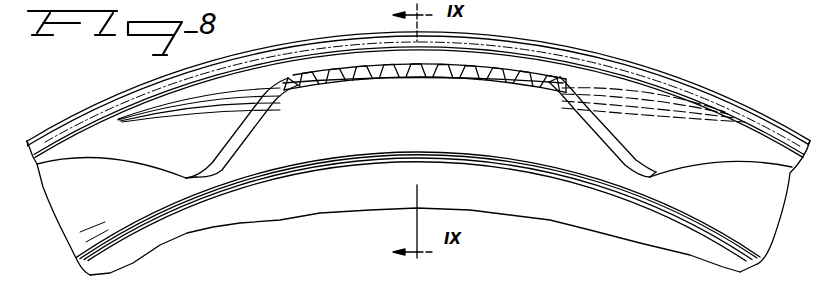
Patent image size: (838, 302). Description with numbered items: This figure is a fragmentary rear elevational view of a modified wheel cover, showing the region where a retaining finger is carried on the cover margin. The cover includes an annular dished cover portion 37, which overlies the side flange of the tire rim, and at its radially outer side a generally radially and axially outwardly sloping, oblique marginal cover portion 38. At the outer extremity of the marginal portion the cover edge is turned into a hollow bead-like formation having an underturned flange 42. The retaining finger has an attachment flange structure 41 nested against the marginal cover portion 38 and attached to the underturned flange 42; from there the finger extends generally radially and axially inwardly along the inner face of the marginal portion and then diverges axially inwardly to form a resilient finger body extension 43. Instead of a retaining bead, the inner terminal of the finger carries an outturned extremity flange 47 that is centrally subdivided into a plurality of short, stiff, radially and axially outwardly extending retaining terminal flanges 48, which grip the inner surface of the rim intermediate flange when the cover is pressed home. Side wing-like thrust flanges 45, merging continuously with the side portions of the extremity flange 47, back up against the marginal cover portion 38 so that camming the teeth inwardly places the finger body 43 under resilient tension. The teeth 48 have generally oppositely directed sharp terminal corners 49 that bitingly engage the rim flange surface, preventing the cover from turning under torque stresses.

The annular dished cover portion 37 is at (691, 6).
The marginal cover portion 38 is at (747, 220).
The attachment flange structure 41 is at (372, 67).
The underturned flange 42 is at (755, 118).
The finger body extension 43 is at (431, 80).
The thrust flange 45 is at (657, 161).
The outturned extremity flange 47 is at (555, 88).
The retaining terminal flanges 48 is at (390, 70).
The sharp terminal corners 49 is at (497, 70).